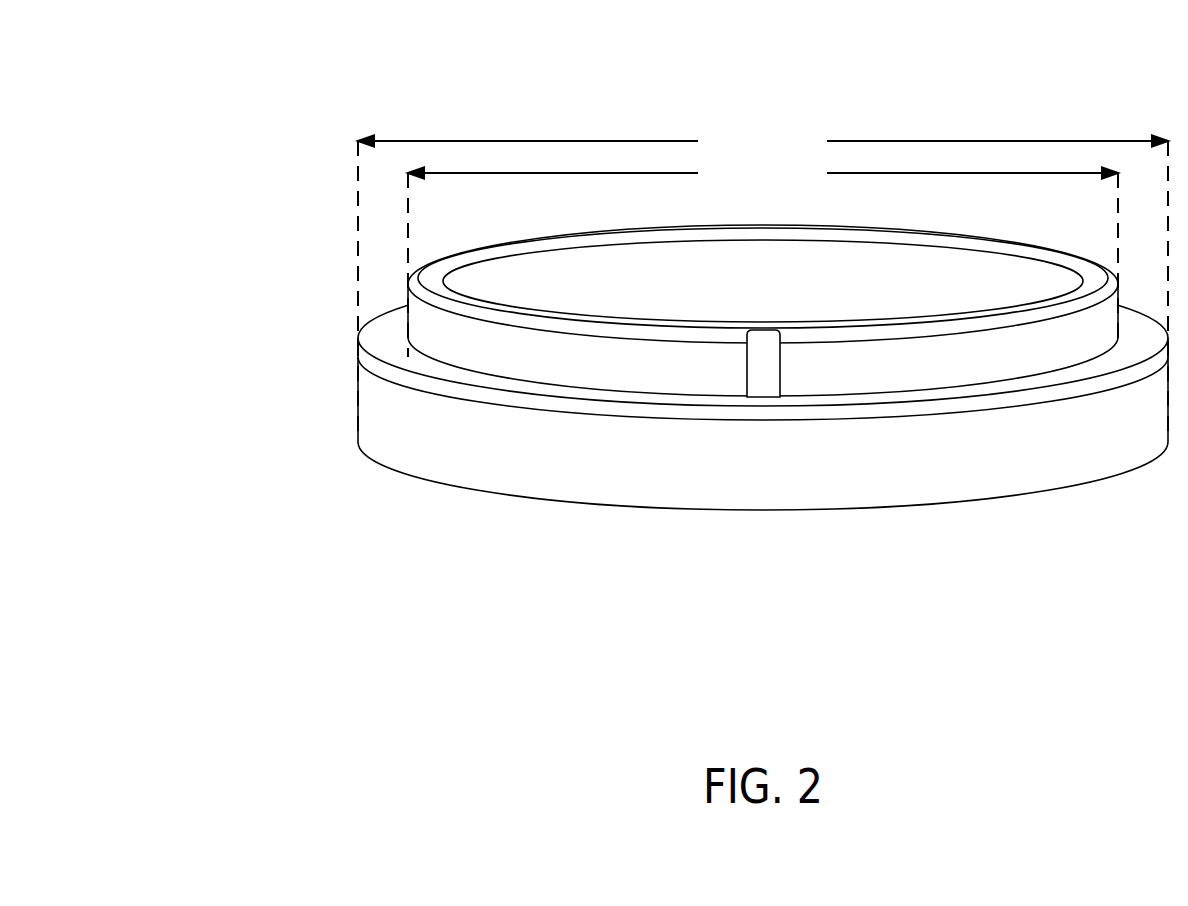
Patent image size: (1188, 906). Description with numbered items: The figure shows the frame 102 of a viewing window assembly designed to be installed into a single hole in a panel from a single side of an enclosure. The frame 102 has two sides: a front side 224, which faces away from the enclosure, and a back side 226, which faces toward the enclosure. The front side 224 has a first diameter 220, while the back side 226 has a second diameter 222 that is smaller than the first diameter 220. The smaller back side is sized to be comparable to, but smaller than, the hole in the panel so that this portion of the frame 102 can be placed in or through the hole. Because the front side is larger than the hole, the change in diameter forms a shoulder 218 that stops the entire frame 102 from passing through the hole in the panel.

The frame 102 is at (372, 97).
The shoulder 218 is at (392, 333).
The first diameter 220 is at (763, 272).
The second diameter 222 is at (763, 263).
The front side 224 is at (796, 529).
The back side 226 is at (715, 271).